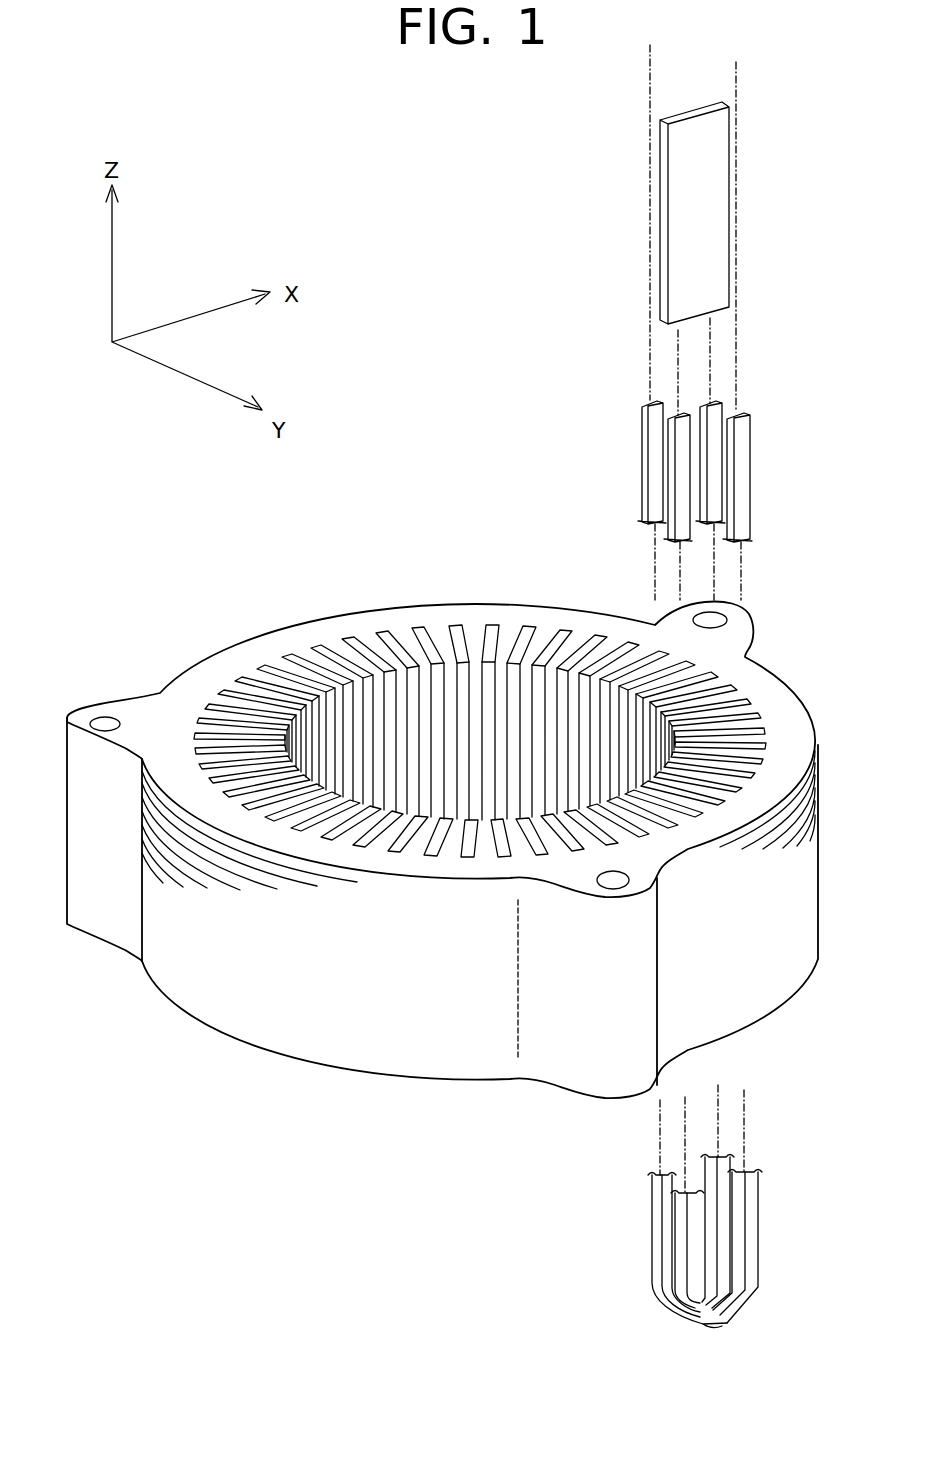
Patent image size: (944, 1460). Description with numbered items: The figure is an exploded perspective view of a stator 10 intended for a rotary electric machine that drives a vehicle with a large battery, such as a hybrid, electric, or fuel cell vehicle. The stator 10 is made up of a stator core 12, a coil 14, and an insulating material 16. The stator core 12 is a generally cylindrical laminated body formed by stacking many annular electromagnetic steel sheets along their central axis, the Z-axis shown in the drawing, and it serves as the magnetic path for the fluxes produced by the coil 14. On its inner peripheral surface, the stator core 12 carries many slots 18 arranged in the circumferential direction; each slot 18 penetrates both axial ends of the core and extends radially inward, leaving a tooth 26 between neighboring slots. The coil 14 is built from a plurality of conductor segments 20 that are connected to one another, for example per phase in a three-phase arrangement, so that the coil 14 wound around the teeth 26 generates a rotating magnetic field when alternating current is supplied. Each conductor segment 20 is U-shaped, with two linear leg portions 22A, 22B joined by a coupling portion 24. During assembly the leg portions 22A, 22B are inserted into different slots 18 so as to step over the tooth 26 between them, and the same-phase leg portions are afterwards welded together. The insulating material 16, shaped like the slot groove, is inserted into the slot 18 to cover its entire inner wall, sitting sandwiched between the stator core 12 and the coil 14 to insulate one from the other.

The stator 10 is at (433, 390).
The stator core 12 is at (163, 715).
The coil 14 is at (530, 1280).
The insulating material 16 is at (710, 213).
The slot 18 is at (528, 636).
The conductor segment 20 is at (700, 1334).
The leg portion 22A is at (648, 437).
The leg portion 22B is at (698, 410).
The coupling portion 24 is at (673, 1302).
The tooth 26 is at (505, 648).